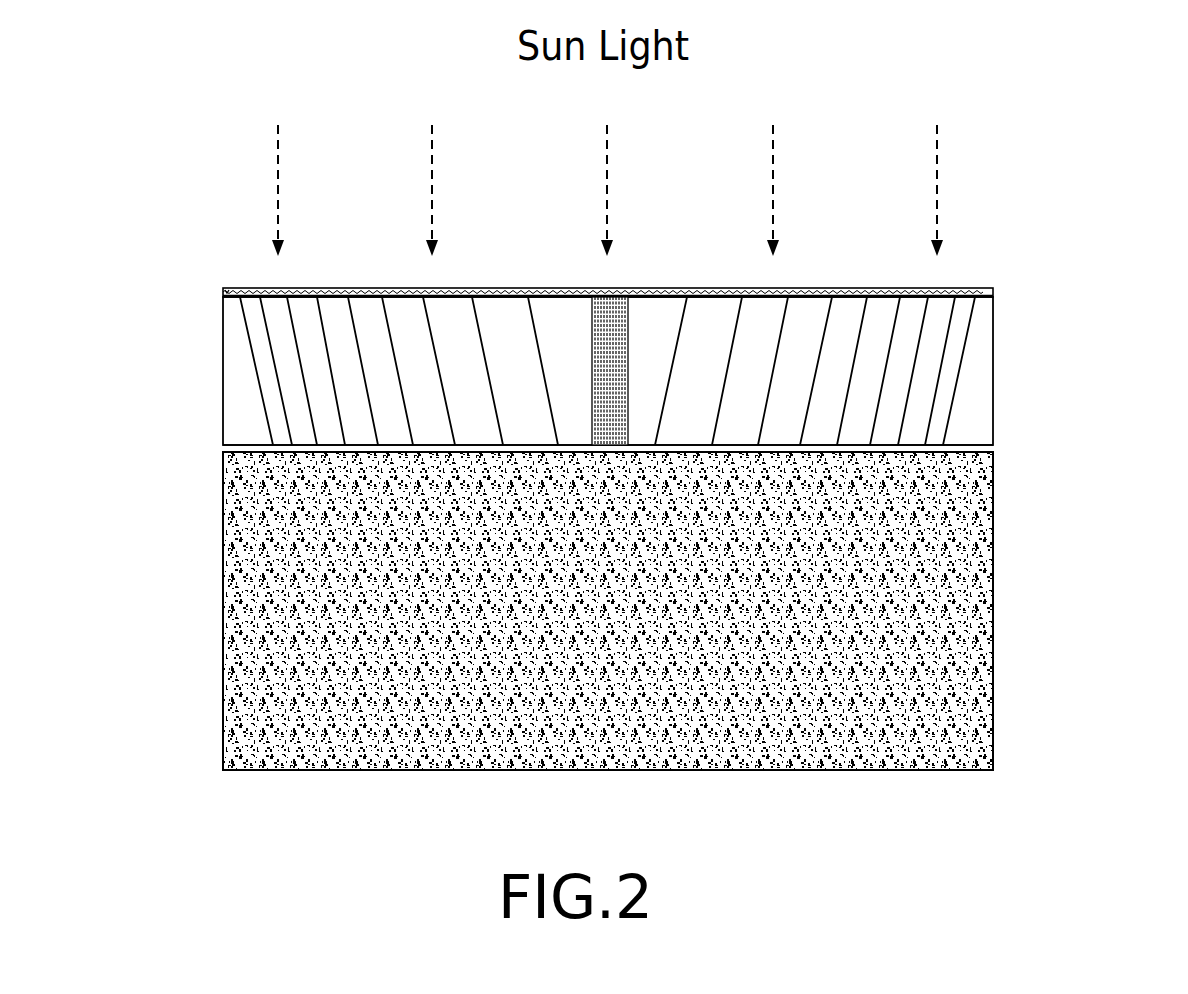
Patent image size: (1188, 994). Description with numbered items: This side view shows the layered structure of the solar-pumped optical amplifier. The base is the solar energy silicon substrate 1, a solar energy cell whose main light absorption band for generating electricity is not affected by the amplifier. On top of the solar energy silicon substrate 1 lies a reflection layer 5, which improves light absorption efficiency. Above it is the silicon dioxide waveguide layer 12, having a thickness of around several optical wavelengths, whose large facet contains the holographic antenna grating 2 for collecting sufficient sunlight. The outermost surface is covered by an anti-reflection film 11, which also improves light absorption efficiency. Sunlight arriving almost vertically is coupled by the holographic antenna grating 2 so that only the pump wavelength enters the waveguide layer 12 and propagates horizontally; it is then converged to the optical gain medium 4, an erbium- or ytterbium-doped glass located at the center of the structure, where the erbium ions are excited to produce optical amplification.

The solar energy silicon substrate 1 is at (245, 643).
The holographic antenna grating 2 is at (960, 367).
The optical gain medium 4 is at (621, 290).
The reflection layer 5 is at (223, 450).
The anti-reflection film 11 is at (223, 292).
The waveguide layer 12 is at (637, 368).